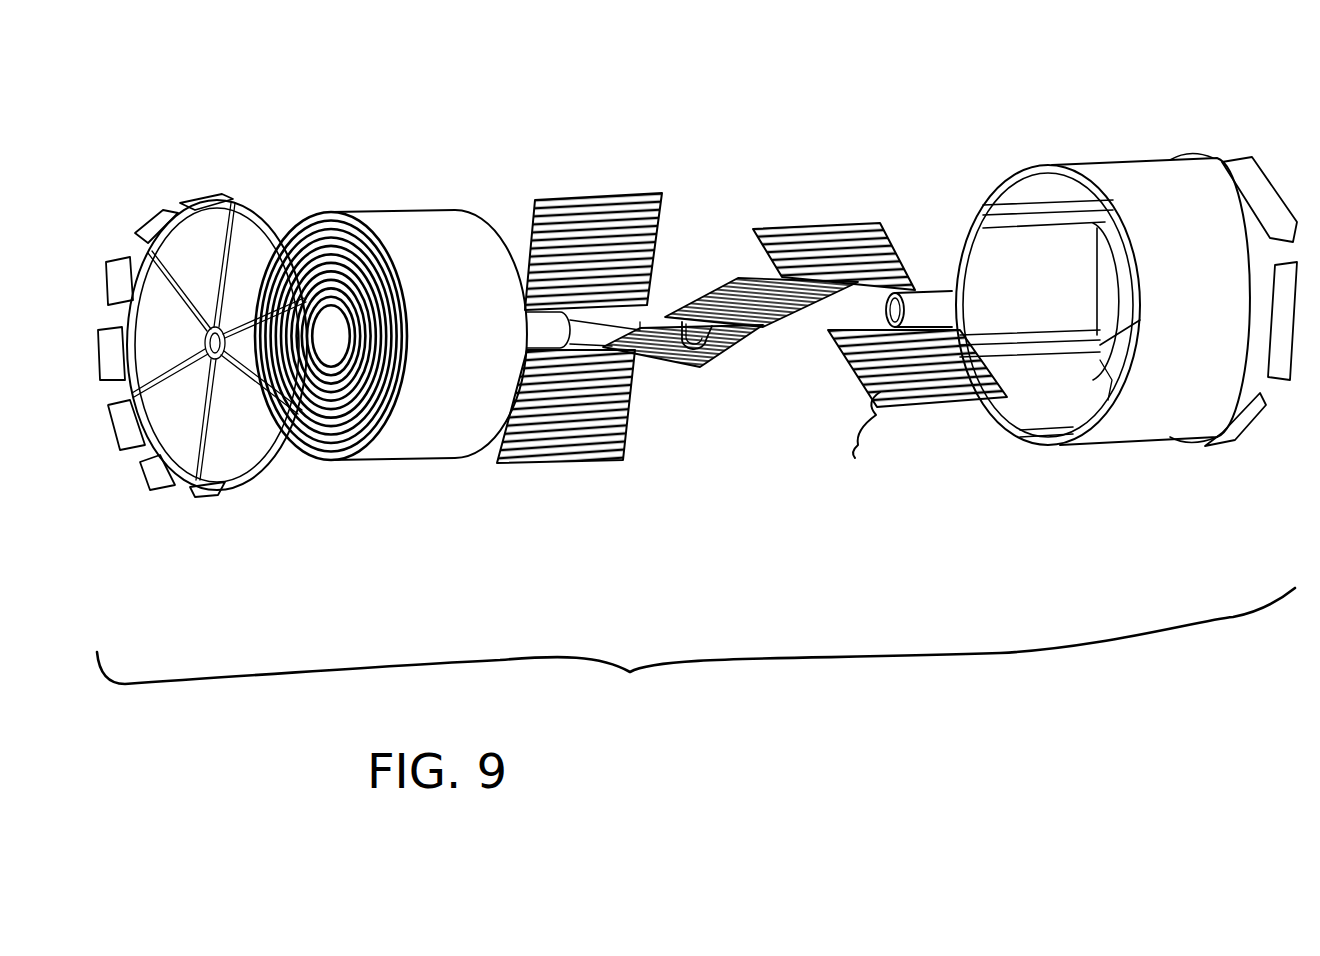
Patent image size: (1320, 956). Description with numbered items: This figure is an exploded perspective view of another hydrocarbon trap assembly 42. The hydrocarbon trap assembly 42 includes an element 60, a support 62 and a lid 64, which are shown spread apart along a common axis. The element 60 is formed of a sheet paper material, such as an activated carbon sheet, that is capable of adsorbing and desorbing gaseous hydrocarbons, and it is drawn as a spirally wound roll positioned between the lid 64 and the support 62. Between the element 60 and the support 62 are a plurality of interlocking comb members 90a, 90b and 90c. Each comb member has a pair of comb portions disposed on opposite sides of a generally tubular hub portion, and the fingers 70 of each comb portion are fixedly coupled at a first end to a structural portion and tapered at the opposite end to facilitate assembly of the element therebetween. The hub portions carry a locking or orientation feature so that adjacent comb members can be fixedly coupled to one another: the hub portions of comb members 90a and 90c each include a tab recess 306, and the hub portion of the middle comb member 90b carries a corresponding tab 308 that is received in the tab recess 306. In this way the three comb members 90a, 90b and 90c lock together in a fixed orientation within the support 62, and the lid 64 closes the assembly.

The hydrocarbon trap assembly 42 is at (780, 680).
The element 60 is at (365, 195).
The support 62 is at (1160, 118).
The lid 64 is at (212, 178).
The fingers 70 is at (875, 434).
The comb member 90a is at (820, 205).
The comb member 90b is at (714, 258).
The comb member 90c is at (594, 177).
The tab recess 306 is at (900, 300).
The tab 308 is at (702, 367).